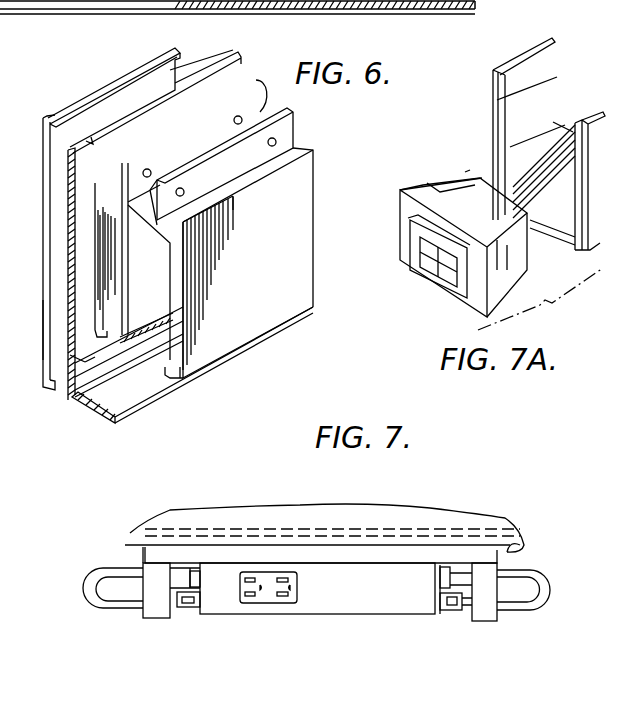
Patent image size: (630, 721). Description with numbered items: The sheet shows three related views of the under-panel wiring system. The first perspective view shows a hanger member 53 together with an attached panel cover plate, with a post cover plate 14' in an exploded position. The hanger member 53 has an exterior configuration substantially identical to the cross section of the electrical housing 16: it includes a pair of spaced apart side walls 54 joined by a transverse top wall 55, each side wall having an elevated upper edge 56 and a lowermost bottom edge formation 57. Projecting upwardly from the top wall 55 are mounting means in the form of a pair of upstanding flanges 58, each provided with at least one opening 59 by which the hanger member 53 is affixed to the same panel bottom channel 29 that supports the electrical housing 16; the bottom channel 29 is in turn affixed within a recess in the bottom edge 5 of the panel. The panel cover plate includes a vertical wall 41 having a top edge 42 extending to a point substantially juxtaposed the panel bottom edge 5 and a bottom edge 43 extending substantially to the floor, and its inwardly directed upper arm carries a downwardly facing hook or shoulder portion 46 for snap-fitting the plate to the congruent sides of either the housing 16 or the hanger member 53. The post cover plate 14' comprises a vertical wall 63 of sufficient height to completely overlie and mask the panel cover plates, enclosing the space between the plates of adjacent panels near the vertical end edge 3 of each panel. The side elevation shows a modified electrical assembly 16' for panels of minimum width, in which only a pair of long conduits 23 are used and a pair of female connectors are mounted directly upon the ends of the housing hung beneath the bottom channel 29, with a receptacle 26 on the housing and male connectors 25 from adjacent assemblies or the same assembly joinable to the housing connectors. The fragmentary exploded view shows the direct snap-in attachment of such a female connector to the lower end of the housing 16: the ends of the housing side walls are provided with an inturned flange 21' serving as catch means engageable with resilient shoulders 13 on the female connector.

In FIG. 6, the post cover plate 14' is at (32, 242).
In FIG. 6, the top edge 42 is at (184, 48).
In FIG. 6, the upstanding flanges 58 is at (266, 105).
In FIG. 6, the transverse top wall 55 is at (293, 150).
In FIG. 6, the elevated upper edge 56 is at (315, 150).
In FIG. 6, the opening 59 is at (185, 190).
In FIG. 6, the hook or shoulder portion 46 is at (92, 182).
In FIG. 6, the vertical wall 41 is at (68, 242).
In FIG. 6, the bottom edge formation 57 is at (106, 327).
In FIG. 6, the hanger member 53 is at (316, 262).
In FIG. 7, the hanger member 53 is at (140, 614).
In FIG. 6, the side walls 54 is at (248, 290).
In FIG. 6, the bottom edge 43 is at (72, 405).
In FIG. 6, the vertical wall 63 is at (42, 336).
In FIG. 6, the vertical end edge 3 is at (21, 349).
In FIG. 7A, the electrical housing 16 is at (546, 141).
In FIG. 7A, the inturned flange 21' is at (551, 140).
In FIG. 7A, the resilient shoulders 13 is at (423, 189).
In FIG. 7, the panel bottom channel 29 is at (478, 557).
In FIG. 7, the bottom edge 5 is at (508, 553).
In FIG. 7, the long conduits 23 is at (535, 578).
In FIG. 7, the male connectors 25 is at (188, 604).
In FIG. 7, the receptacle 26 is at (267, 603).
In FIG. 7, the electrical assembly 16' is at (317, 610).